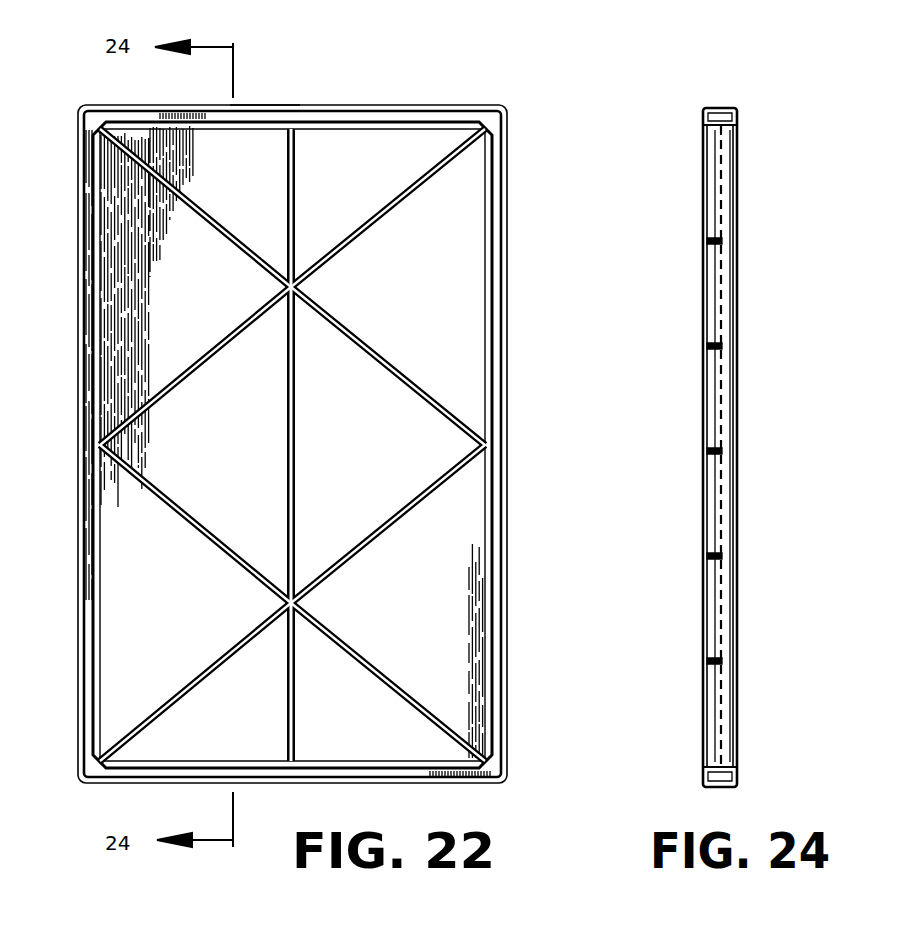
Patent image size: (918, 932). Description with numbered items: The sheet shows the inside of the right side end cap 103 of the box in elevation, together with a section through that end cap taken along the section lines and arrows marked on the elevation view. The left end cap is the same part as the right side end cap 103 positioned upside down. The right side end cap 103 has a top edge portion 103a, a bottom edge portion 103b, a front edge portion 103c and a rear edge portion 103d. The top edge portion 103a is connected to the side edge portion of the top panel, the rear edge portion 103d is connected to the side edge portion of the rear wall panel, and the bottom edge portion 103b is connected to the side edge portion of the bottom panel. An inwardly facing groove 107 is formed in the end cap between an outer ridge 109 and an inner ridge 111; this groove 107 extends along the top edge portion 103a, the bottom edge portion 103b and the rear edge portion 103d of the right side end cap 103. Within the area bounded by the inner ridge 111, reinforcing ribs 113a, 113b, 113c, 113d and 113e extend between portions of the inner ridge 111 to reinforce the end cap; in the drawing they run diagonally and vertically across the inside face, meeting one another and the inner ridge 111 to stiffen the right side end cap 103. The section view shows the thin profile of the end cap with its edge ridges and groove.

In FIG. 22, the right side end cap 103 is at (503, 90).
In FIG. 24, the right side end cap 103 is at (708, 108).
In FIG. 22, the top edge portion 103a is at (396, 150).
In FIG. 22, the bottom edge portion 103b is at (395, 735).
In FIG. 22, the front edge portion 103c is at (462, 586).
In FIG. 22, the rear edge portion 103d is at (100, 440).
In FIG. 22, the inwardly facing groove 107 is at (305, 122).
In FIG. 24, the inwardly facing groove 107 is at (705, 114).
In FIG. 22, the outer ridge 109 is at (262, 106).
In FIG. 22, the inner ridge 111 is at (206, 128).
In FIG. 22, the reinforcing rib 113a is at (196, 381).
In FIG. 22, the reinforcing rib 113b is at (238, 252).
In FIG. 22, the reinforcing rib 113c is at (297, 400).
In FIG. 22, the reinforcing rib 113d is at (175, 493).
In FIG. 22, the reinforcing rib 113e is at (378, 538).